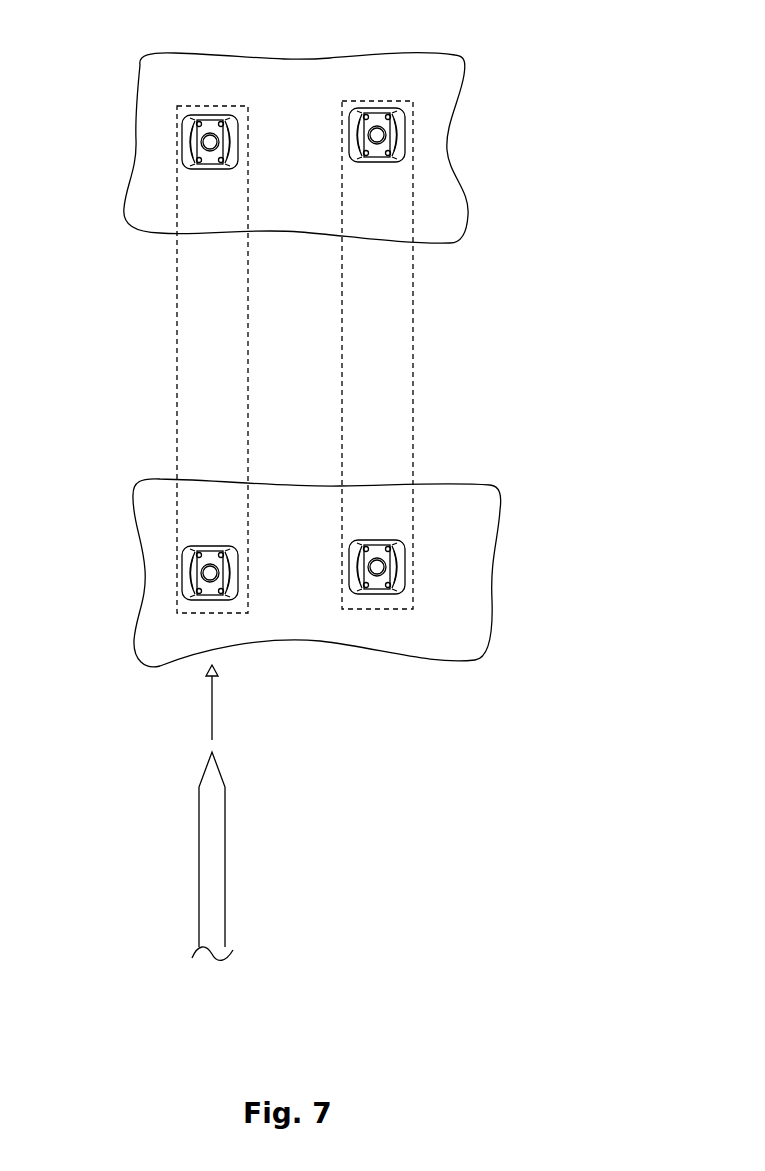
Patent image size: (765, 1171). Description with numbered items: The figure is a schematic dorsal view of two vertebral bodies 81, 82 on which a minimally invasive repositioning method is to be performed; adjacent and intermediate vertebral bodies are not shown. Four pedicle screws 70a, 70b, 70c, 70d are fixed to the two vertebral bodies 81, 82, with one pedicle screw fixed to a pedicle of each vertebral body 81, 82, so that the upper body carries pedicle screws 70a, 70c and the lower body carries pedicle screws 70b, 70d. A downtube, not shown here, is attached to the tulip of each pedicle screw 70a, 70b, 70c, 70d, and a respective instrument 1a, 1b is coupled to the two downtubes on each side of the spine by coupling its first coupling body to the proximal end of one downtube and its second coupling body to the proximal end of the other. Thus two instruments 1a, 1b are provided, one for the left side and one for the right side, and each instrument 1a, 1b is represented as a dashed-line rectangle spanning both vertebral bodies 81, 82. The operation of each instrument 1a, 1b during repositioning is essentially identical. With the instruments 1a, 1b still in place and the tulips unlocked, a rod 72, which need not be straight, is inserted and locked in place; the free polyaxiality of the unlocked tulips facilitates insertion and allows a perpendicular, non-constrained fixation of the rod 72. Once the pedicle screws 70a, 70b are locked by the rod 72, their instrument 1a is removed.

The vertebral body 81 is at (470, 68).
The vertebral body 82 is at (503, 489).
The instrument 1a is at (170, 337).
The instrument 1b is at (421, 335).
The pedicle screw 70a is at (172, 154).
The pedicle screw 70b is at (172, 585).
The pedicle screw 70c is at (415, 149).
The pedicle screw 70d is at (416, 574).
The rod 72 is at (232, 778).